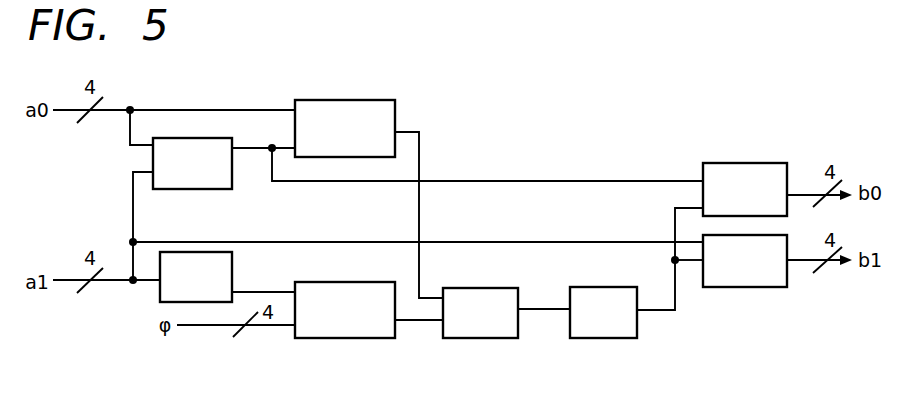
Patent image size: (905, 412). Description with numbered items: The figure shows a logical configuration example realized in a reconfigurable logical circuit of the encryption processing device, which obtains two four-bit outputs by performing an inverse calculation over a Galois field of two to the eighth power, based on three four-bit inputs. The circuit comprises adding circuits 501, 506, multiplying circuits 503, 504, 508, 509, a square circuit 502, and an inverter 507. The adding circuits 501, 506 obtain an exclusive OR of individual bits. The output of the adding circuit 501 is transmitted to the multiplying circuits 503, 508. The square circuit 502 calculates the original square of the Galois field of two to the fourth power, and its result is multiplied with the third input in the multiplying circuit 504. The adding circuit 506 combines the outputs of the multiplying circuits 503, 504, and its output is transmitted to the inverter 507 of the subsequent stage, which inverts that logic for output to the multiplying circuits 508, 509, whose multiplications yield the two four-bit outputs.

The adding circuit 501 is at (207, 190).
The square circuit 502 is at (233, 272).
The multiplying circuit 503 is at (357, 100).
The multiplying circuit 504 is at (365, 338).
The adding circuit 506 is at (493, 338).
The inverter 507 is at (612, 338).
The multiplying circuit 508 is at (762, 163).
The multiplying circuit 509 is at (758, 287).